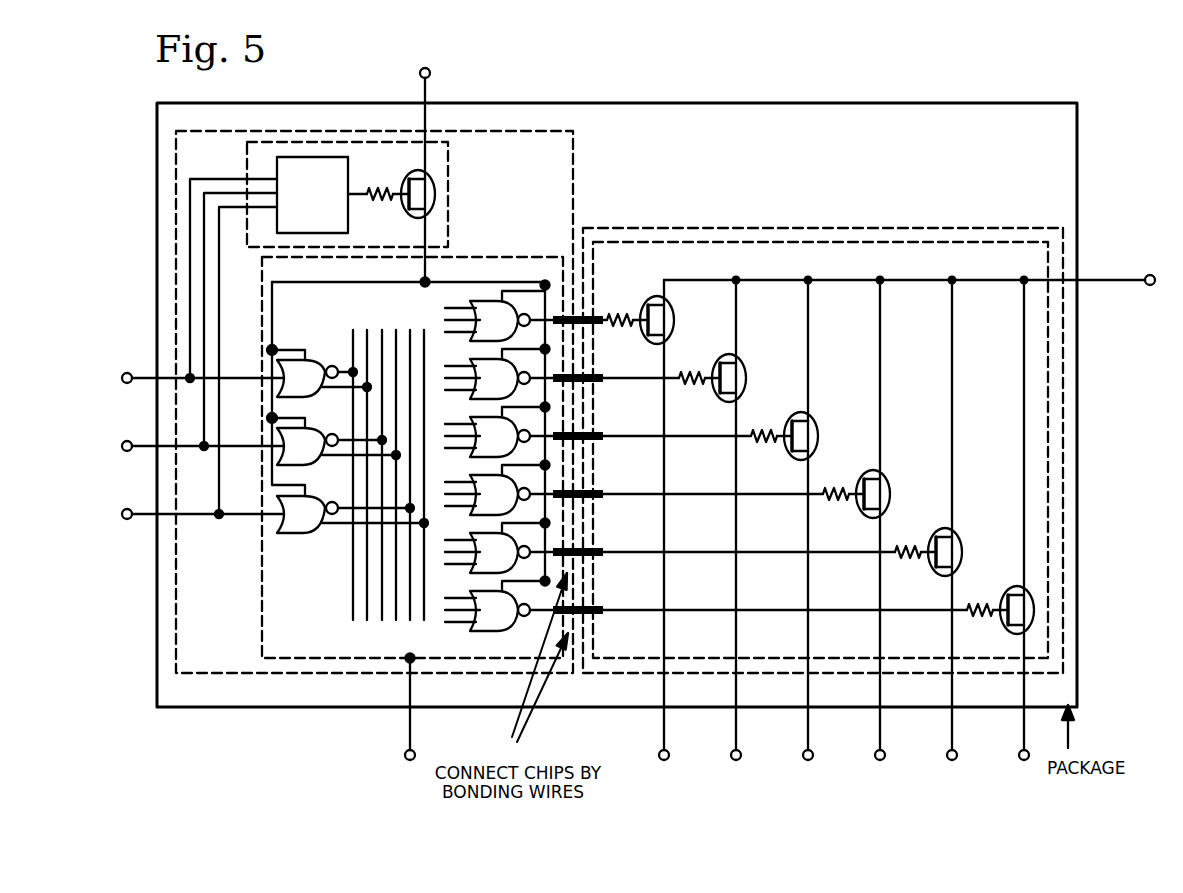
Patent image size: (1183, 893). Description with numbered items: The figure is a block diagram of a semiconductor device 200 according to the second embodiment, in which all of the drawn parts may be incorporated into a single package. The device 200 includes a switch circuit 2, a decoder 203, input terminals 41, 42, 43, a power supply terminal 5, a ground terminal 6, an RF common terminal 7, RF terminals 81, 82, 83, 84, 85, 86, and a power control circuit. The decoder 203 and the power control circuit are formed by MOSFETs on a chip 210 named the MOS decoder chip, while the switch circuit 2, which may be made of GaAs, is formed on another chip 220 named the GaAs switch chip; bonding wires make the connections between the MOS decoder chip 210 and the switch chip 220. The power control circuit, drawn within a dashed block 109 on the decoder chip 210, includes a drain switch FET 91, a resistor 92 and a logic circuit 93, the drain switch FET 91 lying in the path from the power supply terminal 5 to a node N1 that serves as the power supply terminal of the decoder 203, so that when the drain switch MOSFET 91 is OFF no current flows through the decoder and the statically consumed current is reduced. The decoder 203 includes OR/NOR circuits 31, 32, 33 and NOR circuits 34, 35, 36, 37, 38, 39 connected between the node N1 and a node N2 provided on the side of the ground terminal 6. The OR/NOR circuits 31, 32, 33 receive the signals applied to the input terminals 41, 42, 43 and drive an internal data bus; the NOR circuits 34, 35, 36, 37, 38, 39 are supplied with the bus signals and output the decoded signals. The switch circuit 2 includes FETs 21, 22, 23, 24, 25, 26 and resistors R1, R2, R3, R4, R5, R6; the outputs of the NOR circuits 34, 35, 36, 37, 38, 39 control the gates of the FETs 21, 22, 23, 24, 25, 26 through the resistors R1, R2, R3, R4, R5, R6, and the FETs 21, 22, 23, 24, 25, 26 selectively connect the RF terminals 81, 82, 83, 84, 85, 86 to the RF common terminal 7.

The semiconductor device 200 is at (598, 54).
The MOS decoder chip 210 is at (195, 673).
The GaAs switch chip 220 is at (800, 227).
The decoder 203 is at (385, 662).
The switch circuit 2 is at (887, 242).
The control circuit block 109 is at (450, 178).
The logic circuit 93 is at (351, 181).
The resistor 92 is at (382, 203).
The drain switch FET 91 is at (430, 207).
The power supply terminal 5 is at (431, 66).
The ground terminal 6 is at (404, 759).
The RF common terminal 7 is at (1152, 272).
The input terminal 41 is at (123, 371).
The input terminal 42 is at (123, 439).
The input terminal 43 is at (123, 507).
The OR/NOR circuit 31 is at (308, 353).
The OR/NOR circuit 32 is at (308, 421).
The OR/NOR circuit 33 is at (308, 489).
The NOR circuit 34 is at (488, 343).
The NOR circuit 35 is at (488, 401).
The NOR circuit 36 is at (488, 459).
The NOR circuit 37 is at (488, 517).
The NOR circuit 38 is at (488, 575).
The NOR circuit 39 is at (488, 633).
The FET 21 is at (657, 294).
The FET 22 is at (729, 352).
The FET 23 is at (801, 410).
The FET 24 is at (873, 468).
The FET 25 is at (945, 526).
The FET 26 is at (1017, 584).
The resistor R1 is at (612, 314).
The resistor R2 is at (693, 372).
The resistor R3 is at (765, 430).
The resistor R4 is at (837, 488).
The resistor R5 is at (909, 546).
The resistor R6 is at (981, 604).
The RF terminal 81 is at (658, 762).
The RF terminal 82 is at (734, 762).
The RF terminal 83 is at (806, 760).
The RF terminal 84 is at (878, 762).
The RF terminal 85 is at (955, 760).
The RF terminal 86 is at (1026, 762).
The node N1 is at (428, 278).
The node N2 is at (413, 664).